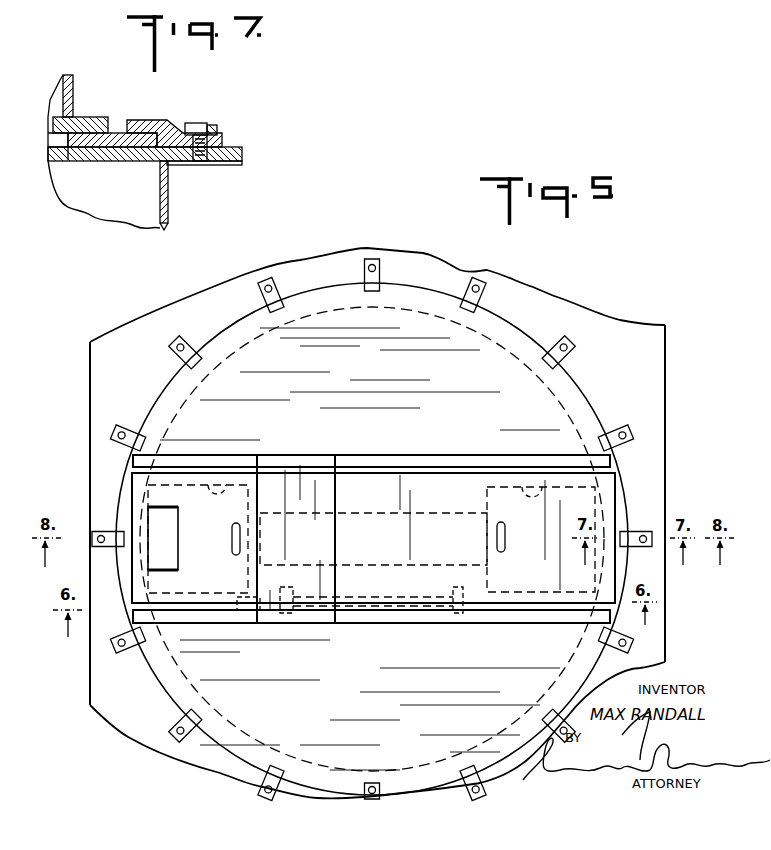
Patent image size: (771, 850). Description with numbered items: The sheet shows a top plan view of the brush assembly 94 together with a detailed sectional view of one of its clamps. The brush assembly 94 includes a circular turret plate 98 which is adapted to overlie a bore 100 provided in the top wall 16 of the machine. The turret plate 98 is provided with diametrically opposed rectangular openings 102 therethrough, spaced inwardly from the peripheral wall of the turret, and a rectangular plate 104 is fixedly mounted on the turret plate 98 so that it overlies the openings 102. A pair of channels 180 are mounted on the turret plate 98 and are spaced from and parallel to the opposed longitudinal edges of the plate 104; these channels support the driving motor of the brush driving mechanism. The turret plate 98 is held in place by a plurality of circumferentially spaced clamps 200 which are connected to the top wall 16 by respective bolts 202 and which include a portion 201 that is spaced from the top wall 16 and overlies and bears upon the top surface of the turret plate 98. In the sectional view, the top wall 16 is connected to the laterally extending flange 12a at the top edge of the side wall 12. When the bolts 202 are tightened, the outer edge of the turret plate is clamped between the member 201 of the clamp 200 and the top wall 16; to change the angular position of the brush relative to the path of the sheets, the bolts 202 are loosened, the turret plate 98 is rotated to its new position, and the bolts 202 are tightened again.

In FIG. 7, the side wall 12 is at (168, 221).
In FIG. 7, the laterally extending flange 12a is at (242, 163).
In FIG. 5, the top wall 16 is at (623, 332).
In FIG. 5, the brush assembly 94 is at (343, 247).
In FIG. 5, the circular turret plate 98 is at (513, 340).
In FIG. 5, the bore 100 is at (470, 337).
In FIG. 5, the rectangular openings 102 is at (213, 485).
In FIG. 5, the rectangular plate 104 is at (375, 488).
In FIG. 5, the channels 180 is at (363, 442).
In FIG. 7, the clamps 200 is at (183, 92).
In FIG. 5, the clamps 200 is at (260, 296).
In FIG. 7, the clamp portion 201 is at (151, 120).
In FIG. 7, the bolts 202 is at (203, 123).
In FIG. 5, the bolts 202 is at (378, 262).